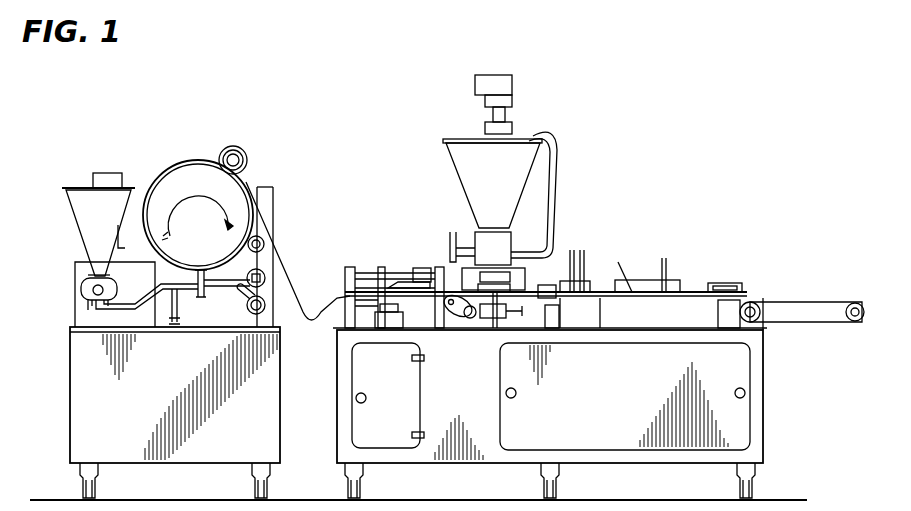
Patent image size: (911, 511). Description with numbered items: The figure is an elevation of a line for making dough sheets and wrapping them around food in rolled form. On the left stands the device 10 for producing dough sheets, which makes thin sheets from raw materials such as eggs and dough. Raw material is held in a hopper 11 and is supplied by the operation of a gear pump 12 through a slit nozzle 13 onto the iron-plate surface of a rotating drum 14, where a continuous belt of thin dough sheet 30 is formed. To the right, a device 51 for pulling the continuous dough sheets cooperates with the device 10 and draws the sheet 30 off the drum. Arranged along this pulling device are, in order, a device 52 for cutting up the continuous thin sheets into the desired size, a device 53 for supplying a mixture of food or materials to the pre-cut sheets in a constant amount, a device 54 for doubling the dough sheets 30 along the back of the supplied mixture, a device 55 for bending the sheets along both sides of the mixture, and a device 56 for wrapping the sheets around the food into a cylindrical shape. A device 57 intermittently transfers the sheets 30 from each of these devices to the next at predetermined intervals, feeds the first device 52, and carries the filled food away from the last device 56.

The device for producing dough sheets 10 is at (202, 148).
The hopper 11 is at (80, 203).
The gear pump 12 is at (80, 290).
The slit nozzle 13 is at (204, 277).
The rotating drum 14 is at (172, 187).
The dough sheet 30 is at (295, 285).
The device for pulling the continuous dough sheets 51 is at (656, 160).
The device for cutting up the dough sheets 52 is at (402, 268).
The device for supplying a mixture of food 53 is at (482, 243).
The device for doubling the dough sheets 54 is at (575, 255).
The device for bending the dough sheets 55 is at (647, 282).
The device for wrapping the sheets around the food 56 is at (727, 281).
The device for intermittently transferring the sheets 57 is at (565, 296).